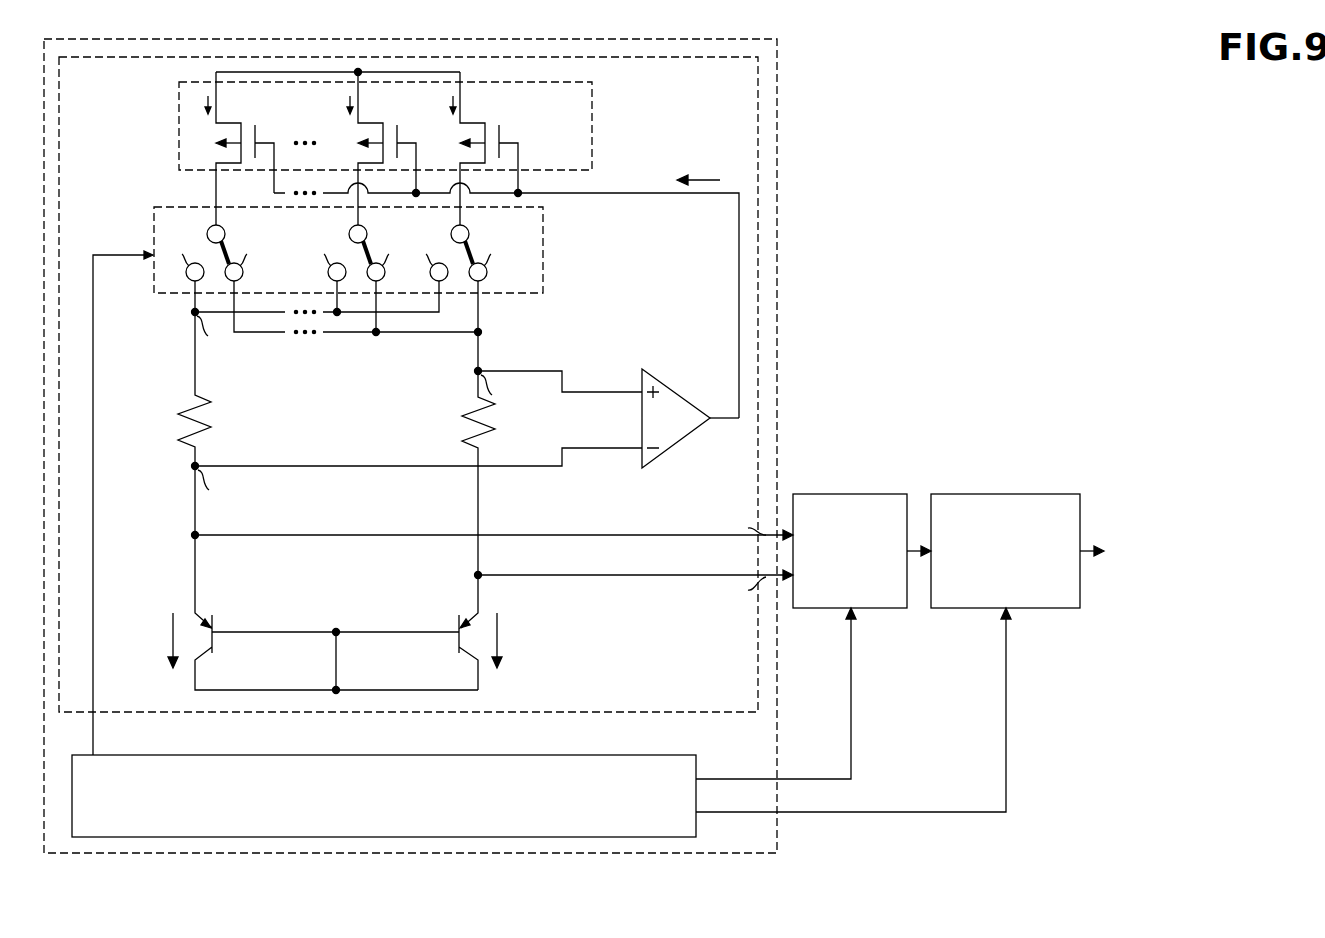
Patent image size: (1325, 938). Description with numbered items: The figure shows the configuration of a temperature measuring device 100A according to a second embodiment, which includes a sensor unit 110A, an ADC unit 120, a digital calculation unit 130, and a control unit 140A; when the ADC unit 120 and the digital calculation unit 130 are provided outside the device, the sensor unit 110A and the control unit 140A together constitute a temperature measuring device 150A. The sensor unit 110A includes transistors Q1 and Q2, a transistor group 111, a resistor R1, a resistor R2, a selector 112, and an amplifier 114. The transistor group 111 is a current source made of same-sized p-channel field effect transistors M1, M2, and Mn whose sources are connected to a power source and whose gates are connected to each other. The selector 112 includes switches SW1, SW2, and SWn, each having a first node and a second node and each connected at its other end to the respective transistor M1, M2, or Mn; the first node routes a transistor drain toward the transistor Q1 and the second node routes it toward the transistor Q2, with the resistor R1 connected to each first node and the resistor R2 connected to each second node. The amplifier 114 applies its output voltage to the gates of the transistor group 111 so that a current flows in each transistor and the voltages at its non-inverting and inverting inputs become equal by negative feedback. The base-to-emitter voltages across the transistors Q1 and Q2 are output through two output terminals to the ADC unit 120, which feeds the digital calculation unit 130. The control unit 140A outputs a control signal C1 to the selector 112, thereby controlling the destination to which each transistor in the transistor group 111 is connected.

The temperature measuring device 100A is at (1108, 68).
The temperature measuring device 150A is at (777, 62).
The sensor unit 110A is at (758, 98).
The transistor group 111 is at (592, 127).
The selector 112 is at (543, 252).
The amplifier 114 is at (667, 389).
The ADC unit 120 is at (851, 494).
The digital calculation unit 130 is at (996, 494).
The control unit 140A is at (640, 755).
The field effect transistor Mn is at (245, 148).
The field effect transistor M2 is at (387, 148).
The field effect transistor M1 is at (489, 148).
The switch SWn is at (225, 231).
The switch SW2 is at (367, 231).
The switch SW1 is at (469, 231).
The resistor R1 is at (211, 423).
The resistor R2 is at (461, 473).
The transistor Q1 is at (336, 612).
The transistor Q2 is at (449, 632).
The control signal C1 is at (123, 503).